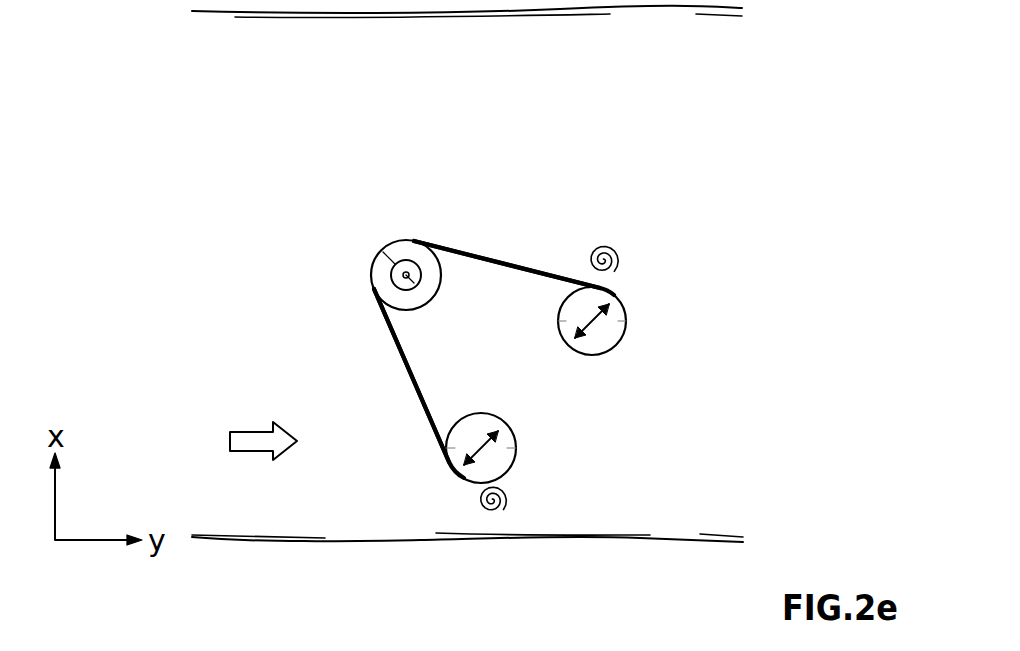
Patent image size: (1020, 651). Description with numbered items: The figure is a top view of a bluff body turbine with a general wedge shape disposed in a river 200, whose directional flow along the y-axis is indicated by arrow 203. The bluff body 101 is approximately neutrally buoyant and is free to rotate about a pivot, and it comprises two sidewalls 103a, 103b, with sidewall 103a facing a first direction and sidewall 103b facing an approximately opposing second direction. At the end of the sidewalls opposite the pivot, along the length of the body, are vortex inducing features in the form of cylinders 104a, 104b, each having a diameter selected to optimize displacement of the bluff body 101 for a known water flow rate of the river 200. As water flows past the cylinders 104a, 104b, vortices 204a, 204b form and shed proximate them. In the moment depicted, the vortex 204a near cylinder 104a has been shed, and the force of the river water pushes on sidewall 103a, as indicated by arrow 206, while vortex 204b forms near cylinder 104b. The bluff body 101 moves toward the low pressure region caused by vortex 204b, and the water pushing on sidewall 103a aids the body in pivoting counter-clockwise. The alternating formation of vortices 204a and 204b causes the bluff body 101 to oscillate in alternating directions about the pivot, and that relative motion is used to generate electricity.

The river 200 is at (278, 68).
The bluff body 101 is at (507, 258).
The sidewall 103a is at (432, 430).
The sidewall 103b is at (485, 253).
The cylinder 104a is at (517, 458).
The cylinder 104b is at (624, 334).
The vortex 204a is at (506, 508).
The vortex 204b is at (608, 244).
The arrow 206 is at (404, 362).
The arrow 203 is at (254, 430).